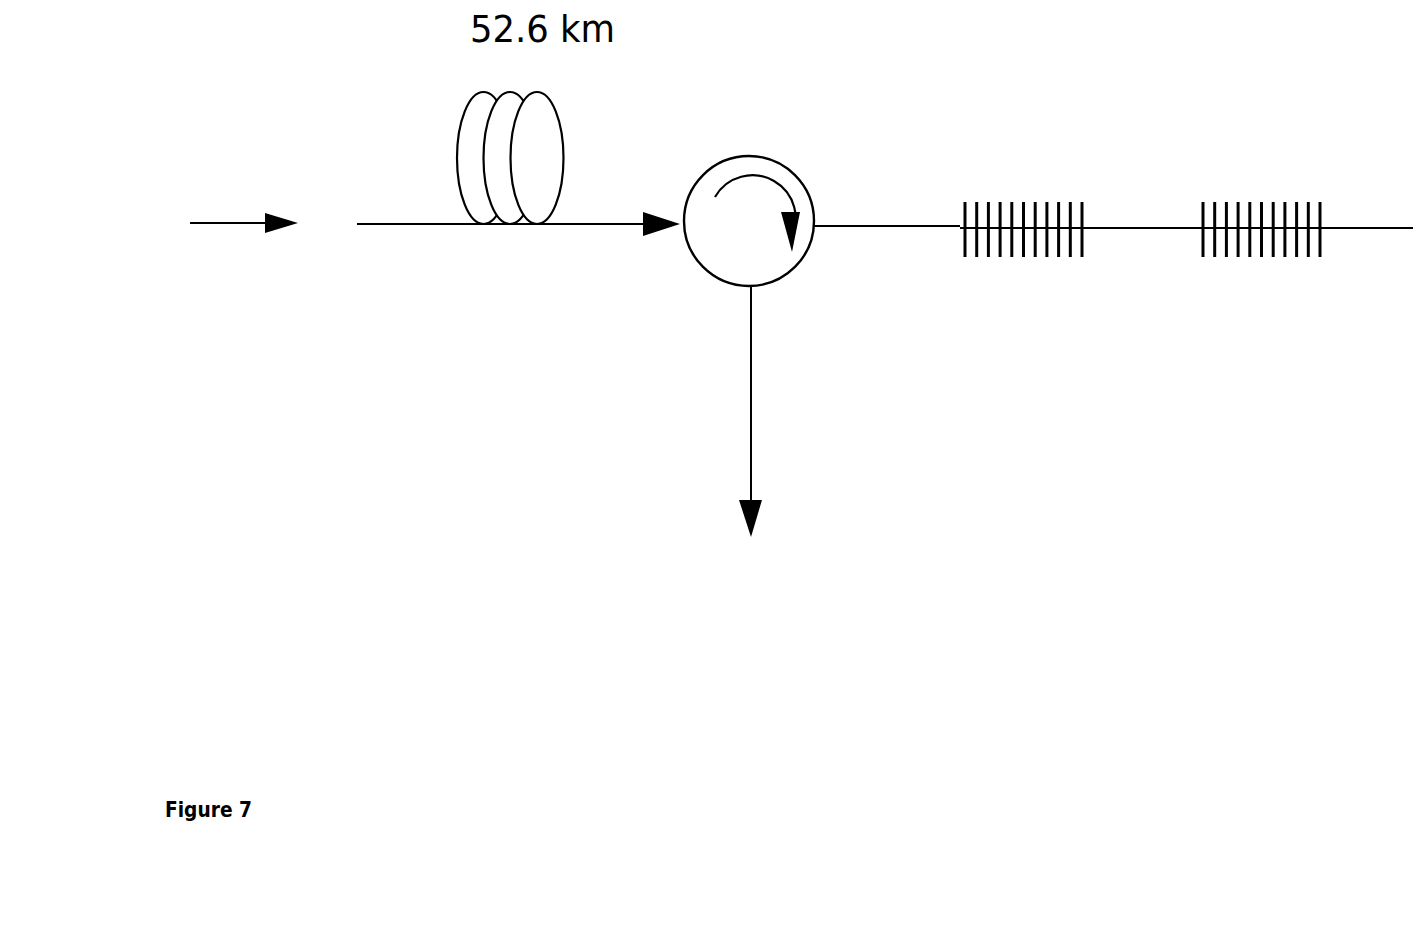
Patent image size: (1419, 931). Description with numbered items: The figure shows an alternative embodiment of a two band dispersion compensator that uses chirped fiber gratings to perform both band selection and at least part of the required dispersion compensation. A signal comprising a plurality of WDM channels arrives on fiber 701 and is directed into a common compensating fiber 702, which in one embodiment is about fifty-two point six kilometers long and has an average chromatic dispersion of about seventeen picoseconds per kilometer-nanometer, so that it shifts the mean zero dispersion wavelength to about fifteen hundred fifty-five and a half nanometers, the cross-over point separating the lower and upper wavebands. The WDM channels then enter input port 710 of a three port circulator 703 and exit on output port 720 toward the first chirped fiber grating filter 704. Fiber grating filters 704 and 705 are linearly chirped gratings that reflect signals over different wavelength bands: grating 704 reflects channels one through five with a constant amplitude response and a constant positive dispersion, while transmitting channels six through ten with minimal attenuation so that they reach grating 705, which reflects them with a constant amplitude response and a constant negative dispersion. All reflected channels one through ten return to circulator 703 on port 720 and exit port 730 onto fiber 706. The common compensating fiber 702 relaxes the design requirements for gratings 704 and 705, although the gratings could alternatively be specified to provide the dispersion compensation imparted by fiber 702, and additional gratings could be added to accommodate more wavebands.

The fiber 701 is at (398, 224).
The common compensating fiber 702 is at (558, 105).
The three port circulator 703 is at (748, 156).
The first chirped fiber grating filter 704 is at (1060, 205).
The fiber grating filter 705 is at (1300, 205).
The fiber 706 is at (755, 428).
The input port 710 is at (653, 205).
The output port 720 is at (887, 202).
The port 730 is at (780, 328).